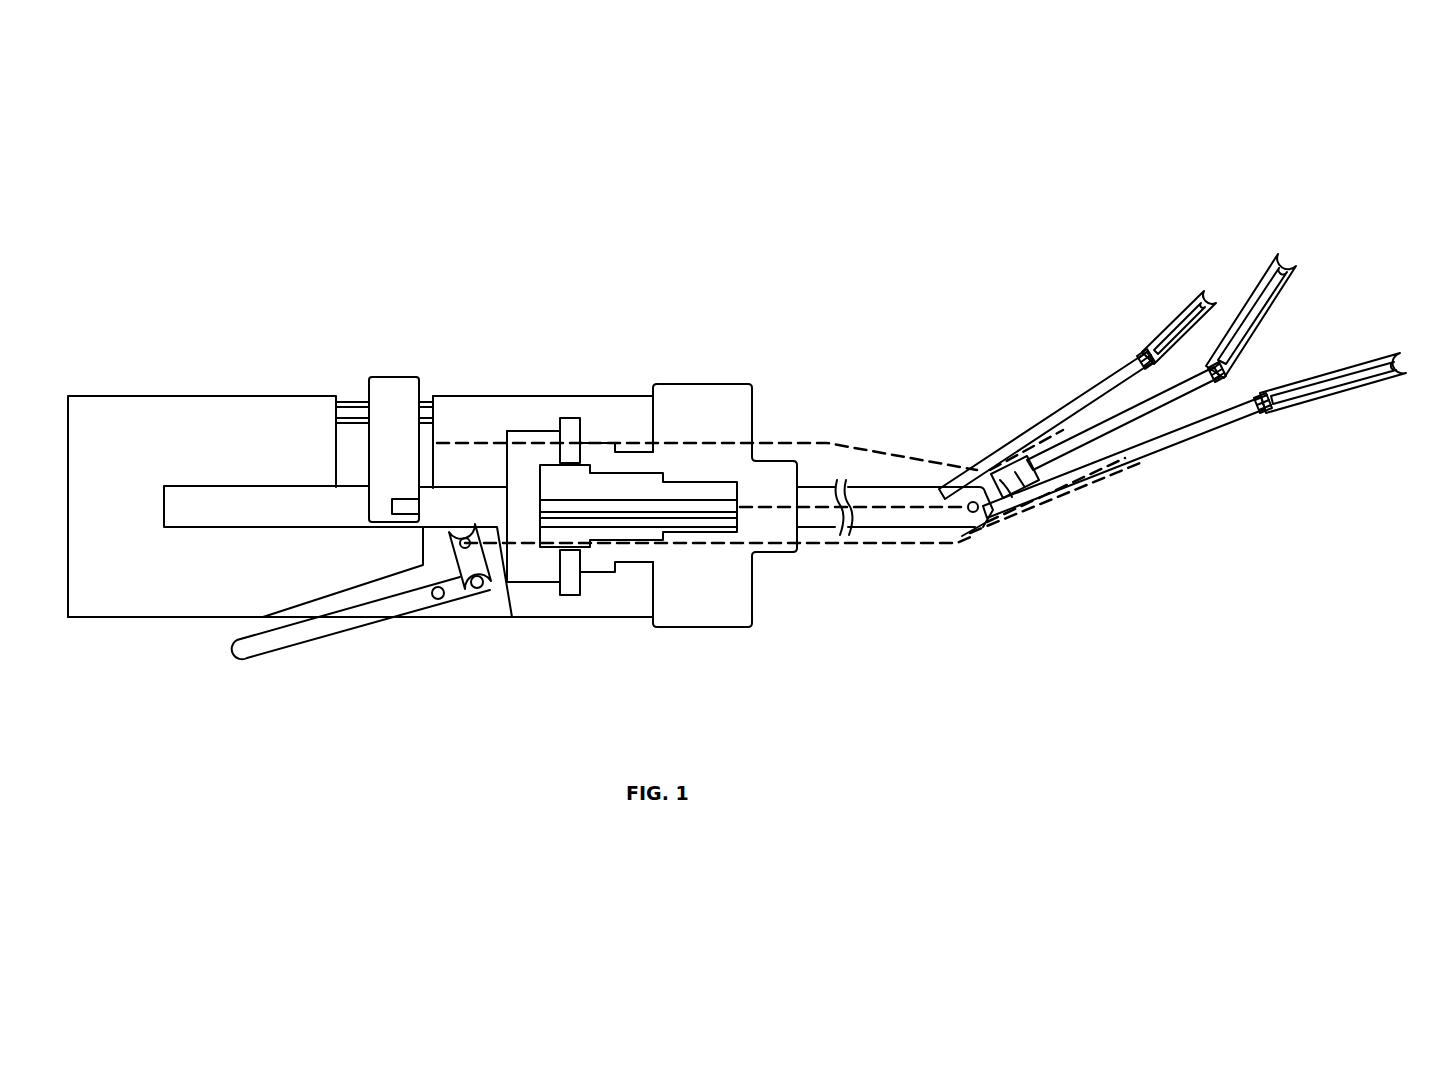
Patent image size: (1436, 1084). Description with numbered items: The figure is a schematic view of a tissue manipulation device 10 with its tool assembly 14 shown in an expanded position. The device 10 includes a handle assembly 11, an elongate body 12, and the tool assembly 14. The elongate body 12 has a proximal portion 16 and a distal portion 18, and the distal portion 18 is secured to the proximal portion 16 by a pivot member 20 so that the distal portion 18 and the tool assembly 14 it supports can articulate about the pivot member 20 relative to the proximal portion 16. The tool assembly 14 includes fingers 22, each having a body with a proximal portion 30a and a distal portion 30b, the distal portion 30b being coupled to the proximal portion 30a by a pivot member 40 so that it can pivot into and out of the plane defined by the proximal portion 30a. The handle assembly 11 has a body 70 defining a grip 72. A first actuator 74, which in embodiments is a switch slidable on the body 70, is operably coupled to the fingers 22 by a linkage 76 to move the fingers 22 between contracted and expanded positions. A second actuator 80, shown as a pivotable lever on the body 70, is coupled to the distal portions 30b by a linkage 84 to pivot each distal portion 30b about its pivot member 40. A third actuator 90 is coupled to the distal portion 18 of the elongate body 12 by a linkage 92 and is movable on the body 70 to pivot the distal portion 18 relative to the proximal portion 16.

The tissue manipulation device 10 is at (684, 262).
The handle assembly 11 is at (220, 394).
The elongate body 12 is at (837, 477).
The tool assembly 14 is at (1108, 486).
The proximal portion 16 is at (945, 522).
The distal portion 18 is at (1012, 468).
The pivot member 20 is at (985, 525).
The fingers 22 is at (1217, 288).
The proximal portion 30a is at (1093, 397).
The distal portion 30b is at (1187, 312).
The pivot member 40 is at (1140, 353).
The body 70 is at (142, 396).
The grip 72 is at (125, 618).
The first actuator 74 is at (392, 388).
The linkage 76 is at (469, 442).
The second actuator 80 is at (340, 628).
The linkage 84 is at (865, 543).
The third actuator 90 is at (572, 465).
The linkage 92 is at (755, 505).